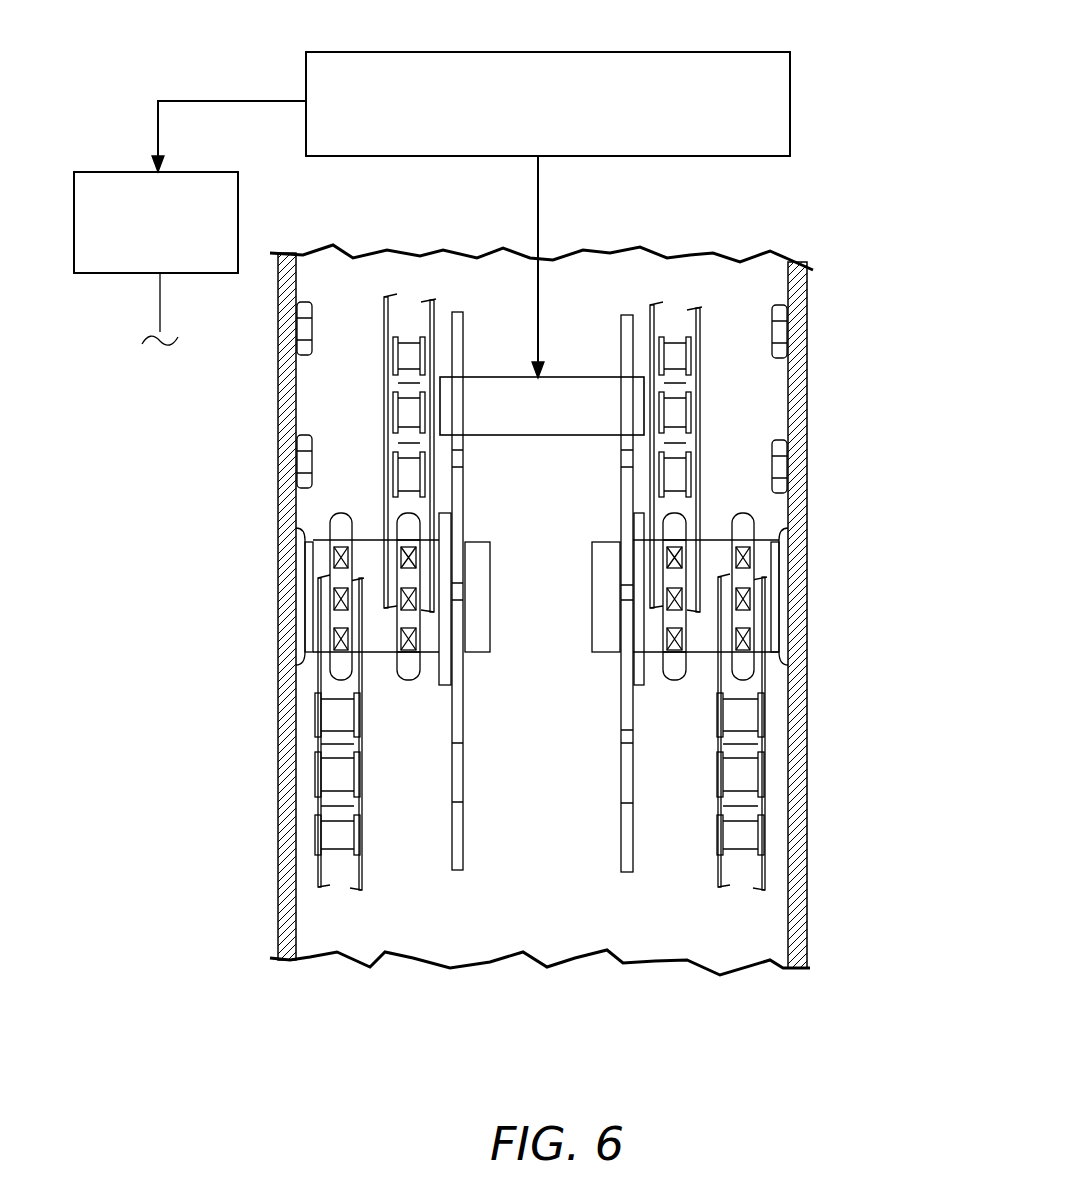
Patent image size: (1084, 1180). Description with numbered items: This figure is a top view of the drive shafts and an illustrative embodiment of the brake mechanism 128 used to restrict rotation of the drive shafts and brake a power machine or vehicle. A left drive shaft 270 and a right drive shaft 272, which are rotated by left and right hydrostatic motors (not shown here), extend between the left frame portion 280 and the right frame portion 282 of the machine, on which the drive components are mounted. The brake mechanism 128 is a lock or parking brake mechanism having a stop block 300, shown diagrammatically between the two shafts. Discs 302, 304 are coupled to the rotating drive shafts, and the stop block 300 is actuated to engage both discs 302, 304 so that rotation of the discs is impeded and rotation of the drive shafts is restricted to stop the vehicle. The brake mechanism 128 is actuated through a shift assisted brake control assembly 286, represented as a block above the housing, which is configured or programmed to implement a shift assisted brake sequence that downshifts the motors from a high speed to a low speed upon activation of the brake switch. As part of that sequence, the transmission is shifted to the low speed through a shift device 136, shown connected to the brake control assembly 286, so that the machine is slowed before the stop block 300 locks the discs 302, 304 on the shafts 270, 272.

The shift device 136 is at (110, 171).
The shift assisted brake control assembly 286 is at (557, 52).
The brake mechanism 128 is at (567, 340).
The disc 302 is at (450, 312).
The stop block 300 is at (477, 373).
The disc 304 is at (632, 312).
The right drive shaft 272 is at (713, 542).
The left drive shaft 270 is at (372, 657).
The left frame portion 280 is at (275, 702).
The right frame portion 282 is at (805, 632).